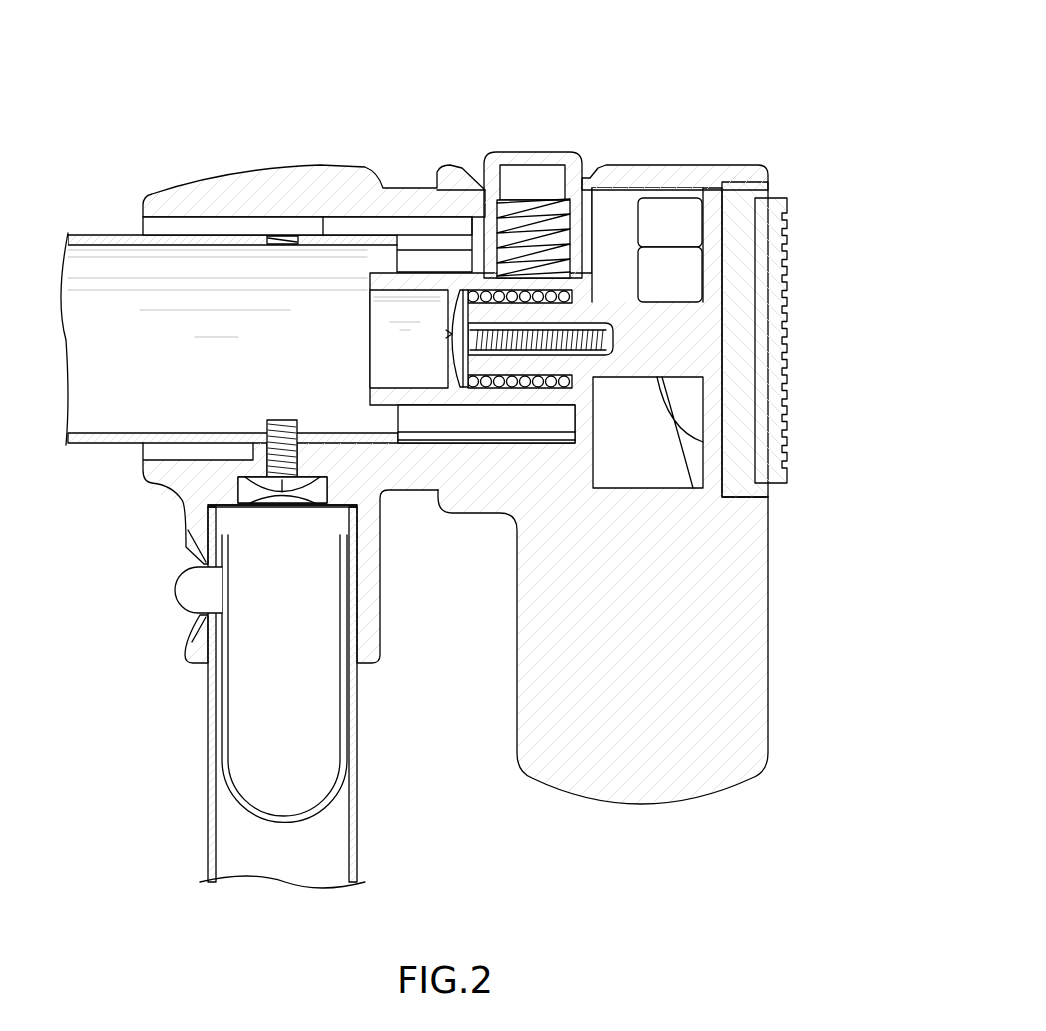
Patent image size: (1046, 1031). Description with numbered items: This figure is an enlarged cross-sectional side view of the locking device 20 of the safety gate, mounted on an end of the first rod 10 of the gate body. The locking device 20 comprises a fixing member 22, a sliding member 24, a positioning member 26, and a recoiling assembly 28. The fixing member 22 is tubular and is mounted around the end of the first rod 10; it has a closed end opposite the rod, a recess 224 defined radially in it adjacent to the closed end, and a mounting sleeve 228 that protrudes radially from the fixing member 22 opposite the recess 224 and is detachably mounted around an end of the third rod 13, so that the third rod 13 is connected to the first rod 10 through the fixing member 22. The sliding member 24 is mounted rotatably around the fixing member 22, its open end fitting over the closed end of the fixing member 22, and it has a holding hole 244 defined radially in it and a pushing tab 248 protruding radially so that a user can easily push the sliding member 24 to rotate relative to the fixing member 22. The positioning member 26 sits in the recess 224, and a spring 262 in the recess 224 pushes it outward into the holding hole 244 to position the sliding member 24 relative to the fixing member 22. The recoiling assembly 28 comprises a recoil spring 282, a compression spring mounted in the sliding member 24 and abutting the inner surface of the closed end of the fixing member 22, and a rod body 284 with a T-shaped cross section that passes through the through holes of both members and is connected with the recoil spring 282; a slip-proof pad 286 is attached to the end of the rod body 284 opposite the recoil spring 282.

The first rod 10 is at (112, 228).
The third rod 13 is at (351, 835).
The locking device 20 is at (489, 434).
The fixing member 22 is at (258, 155).
The sliding member 24 is at (688, 302).
The positioning member 26 is at (502, 189).
The recoiling assembly 28 is at (489, 425).
The recess 224 is at (578, 250).
The mounting sleeve 228 is at (366, 582).
The holding hole 244 is at (562, 178).
The pushing tab 248 is at (636, 782).
The spring 262 is at (545, 210).
The recoil spring 282 is at (568, 385).
The rod body 284 is at (612, 315).
The slip-proof pad 286 is at (772, 214).